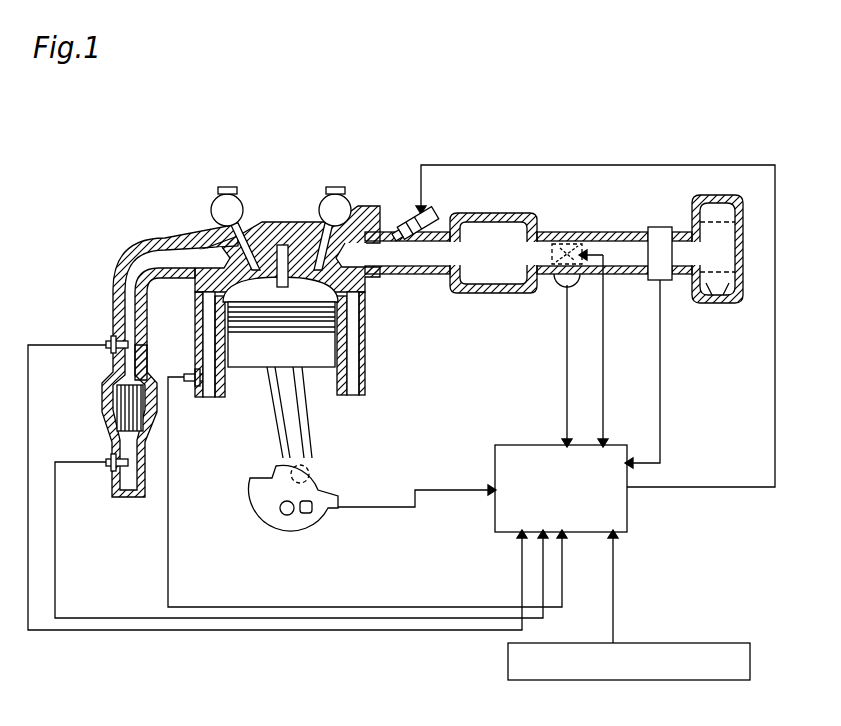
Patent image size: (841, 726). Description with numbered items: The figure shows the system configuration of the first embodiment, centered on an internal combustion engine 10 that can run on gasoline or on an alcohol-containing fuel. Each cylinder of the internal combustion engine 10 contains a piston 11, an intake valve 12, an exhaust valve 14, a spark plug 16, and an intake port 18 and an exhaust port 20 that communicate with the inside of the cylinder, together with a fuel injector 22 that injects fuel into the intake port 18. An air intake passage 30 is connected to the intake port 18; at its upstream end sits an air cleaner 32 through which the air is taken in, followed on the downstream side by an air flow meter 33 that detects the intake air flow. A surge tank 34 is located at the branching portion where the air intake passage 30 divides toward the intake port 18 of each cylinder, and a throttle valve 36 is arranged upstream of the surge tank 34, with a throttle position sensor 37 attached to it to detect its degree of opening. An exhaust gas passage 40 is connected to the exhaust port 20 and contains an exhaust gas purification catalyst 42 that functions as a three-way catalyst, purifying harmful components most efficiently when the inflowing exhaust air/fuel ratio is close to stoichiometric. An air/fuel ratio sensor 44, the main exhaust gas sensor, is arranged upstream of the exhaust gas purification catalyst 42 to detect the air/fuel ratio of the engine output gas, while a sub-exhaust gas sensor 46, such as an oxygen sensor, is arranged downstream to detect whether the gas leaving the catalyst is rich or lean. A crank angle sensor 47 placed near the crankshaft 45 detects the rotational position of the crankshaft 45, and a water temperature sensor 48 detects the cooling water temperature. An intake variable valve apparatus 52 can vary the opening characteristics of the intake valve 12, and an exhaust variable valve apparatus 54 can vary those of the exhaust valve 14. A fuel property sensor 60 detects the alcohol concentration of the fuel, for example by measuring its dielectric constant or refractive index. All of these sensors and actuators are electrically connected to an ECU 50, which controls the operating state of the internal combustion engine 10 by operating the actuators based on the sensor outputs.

The internal combustion engine 10 is at (369, 380).
The piston 11 is at (245, 364).
The intake valve 12 is at (401, 228).
The exhaust valve 14 is at (190, 240).
The spark plug 16 is at (283, 292).
The intake port 18 is at (412, 272).
The exhaust port 20 is at (193, 282).
The fuel injector 22 is at (406, 181).
The air intake passage 30 is at (601, 231).
The air cleaner 32 is at (728, 200).
The air flow meter 33 is at (660, 242).
The surge tank 34 is at (493, 213).
The throttle valve 36 is at (565, 244).
The throttle position sensor 37 is at (560, 287).
The exhaust gas passage 40 is at (113, 266).
The exhaust gas purification catalyst 42 is at (103, 393).
The air/fuel ratio sensor 44 is at (108, 342).
The crankshaft 45 is at (287, 516).
The sub-exhaust gas sensor 46 is at (108, 462).
The crank angle sensor 47 is at (307, 514).
The water temperature sensor 48 is at (197, 380).
The ECU 50 is at (500, 444).
The intake variable valve apparatus 52 is at (321, 208).
The exhaust variable valve apparatus 54 is at (214, 208).
The fuel property sensor 60 is at (663, 643).